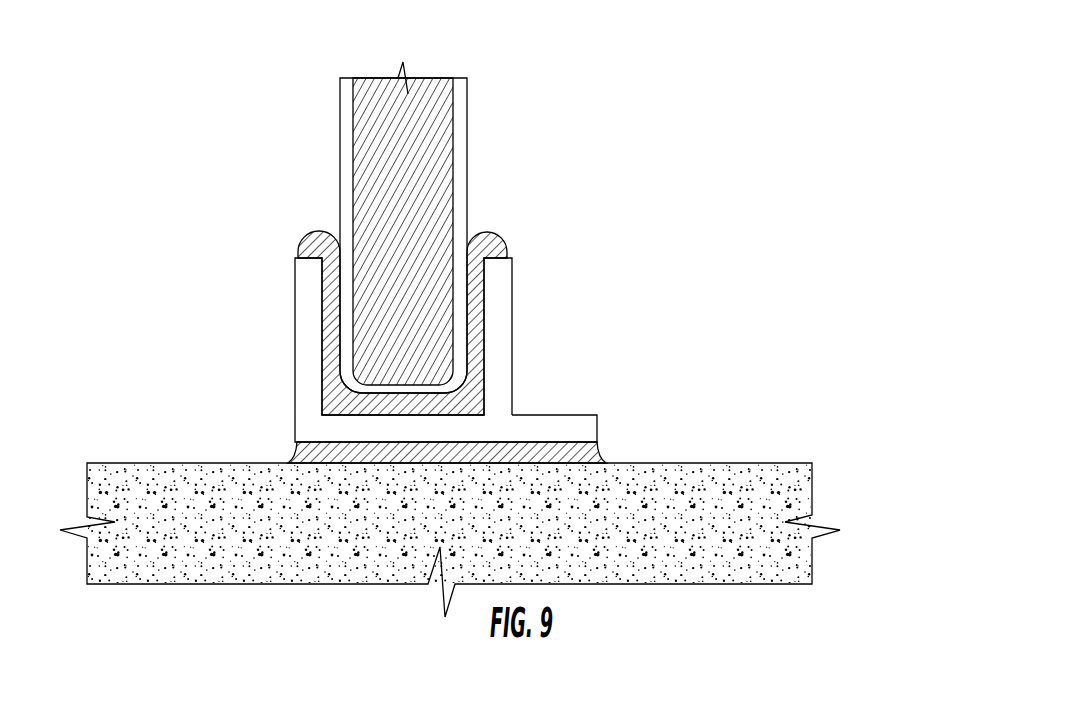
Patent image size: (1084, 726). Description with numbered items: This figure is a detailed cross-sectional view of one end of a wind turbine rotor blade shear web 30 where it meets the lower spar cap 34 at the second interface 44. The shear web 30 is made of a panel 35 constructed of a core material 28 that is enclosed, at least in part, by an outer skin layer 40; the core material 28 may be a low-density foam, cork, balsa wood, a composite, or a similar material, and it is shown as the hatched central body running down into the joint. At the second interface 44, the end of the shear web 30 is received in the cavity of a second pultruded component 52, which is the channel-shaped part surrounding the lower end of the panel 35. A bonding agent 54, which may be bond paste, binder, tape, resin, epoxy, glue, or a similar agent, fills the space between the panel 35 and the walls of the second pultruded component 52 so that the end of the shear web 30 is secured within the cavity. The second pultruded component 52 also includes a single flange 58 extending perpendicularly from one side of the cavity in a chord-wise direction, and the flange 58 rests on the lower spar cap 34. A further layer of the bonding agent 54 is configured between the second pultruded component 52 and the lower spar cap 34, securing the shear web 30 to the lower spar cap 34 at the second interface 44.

The core material 28 is at (332, 231).
The shear web 30 is at (380, 227).
The lower spar cap 34 is at (708, 463).
The panel 35 is at (382, 163).
The outer skin layer 40 is at (468, 120).
The second interface 44 is at (510, 326).
The second pultruded component 52 is at (456, 350).
The bonding agent 54 is at (485, 231).
The flange 58 is at (568, 425).